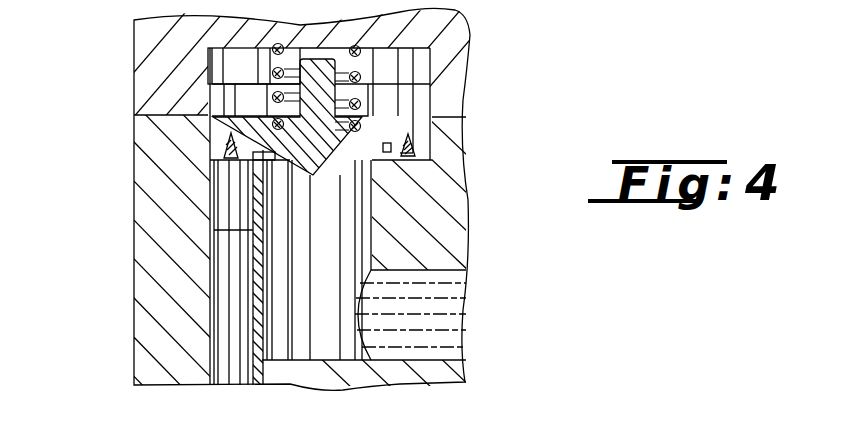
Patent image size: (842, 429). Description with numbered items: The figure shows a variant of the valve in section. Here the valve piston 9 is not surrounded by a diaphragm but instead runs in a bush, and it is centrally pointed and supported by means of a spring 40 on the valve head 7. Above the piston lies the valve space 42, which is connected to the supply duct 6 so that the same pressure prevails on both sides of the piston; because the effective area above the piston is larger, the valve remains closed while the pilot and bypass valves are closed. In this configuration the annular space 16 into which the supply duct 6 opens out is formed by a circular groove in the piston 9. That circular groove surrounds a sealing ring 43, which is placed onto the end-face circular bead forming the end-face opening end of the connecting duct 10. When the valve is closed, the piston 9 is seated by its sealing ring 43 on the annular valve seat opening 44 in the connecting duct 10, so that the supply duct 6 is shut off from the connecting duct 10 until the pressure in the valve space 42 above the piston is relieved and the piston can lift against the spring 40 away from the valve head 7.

The valve head 7 is at (178, 42).
The valve space 42 is at (238, 67).
The sealing ring 43 is at (262, 150).
The annular valve seat opening 44 is at (258, 162).
The supply duct 6 is at (232, 288).
The spring 40 is at (362, 78).
The valve piston 9 is at (329, 115).
The annular space 16 is at (410, 152).
The connecting duct 10 is at (430, 317).